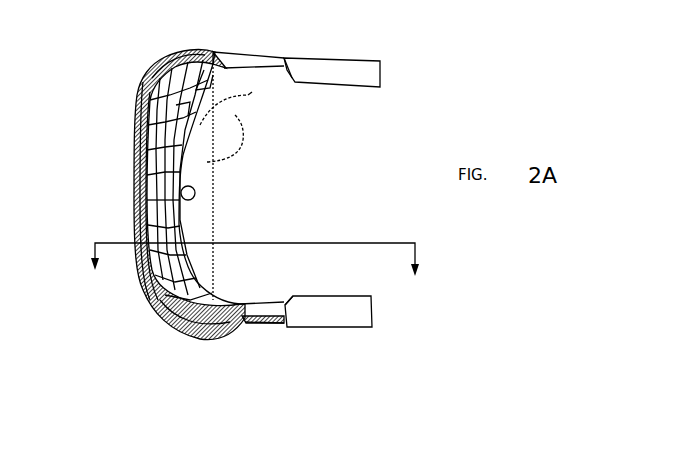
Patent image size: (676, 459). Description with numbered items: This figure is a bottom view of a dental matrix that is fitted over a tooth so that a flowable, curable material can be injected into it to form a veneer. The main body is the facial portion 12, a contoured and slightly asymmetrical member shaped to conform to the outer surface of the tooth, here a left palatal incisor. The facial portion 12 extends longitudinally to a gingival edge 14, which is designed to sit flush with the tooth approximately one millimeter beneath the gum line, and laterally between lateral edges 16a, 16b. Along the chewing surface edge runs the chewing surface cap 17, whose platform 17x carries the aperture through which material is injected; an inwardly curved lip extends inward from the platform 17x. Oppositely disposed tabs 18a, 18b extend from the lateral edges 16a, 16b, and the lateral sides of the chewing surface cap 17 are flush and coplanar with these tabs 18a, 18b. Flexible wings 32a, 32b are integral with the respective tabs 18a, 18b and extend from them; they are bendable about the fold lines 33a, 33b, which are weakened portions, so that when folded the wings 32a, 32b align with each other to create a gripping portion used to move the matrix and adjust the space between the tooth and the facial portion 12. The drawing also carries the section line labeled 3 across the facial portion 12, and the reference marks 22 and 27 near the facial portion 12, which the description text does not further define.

The section line 3- 3 is at (254, 279).
The facial portion 12 is at (124, 169).
The gingival edge 14 is at (182, 222).
The lateral edge 16a is at (207, 56).
The lateral edge 16b is at (233, 333).
The chewing surface cap 17 is at (230, 128).
The platform 17x is at (270, 98).
The tab 18a is at (262, 49).
The tab 18b is at (257, 340).
The rim 22 is at (134, 104).
The marker 27 is at (182, 191).
The wing 32a is at (358, 54).
The wing 32b is at (348, 341).
The fold line 33a is at (287, 55).
The fold line 33b is at (281, 330).